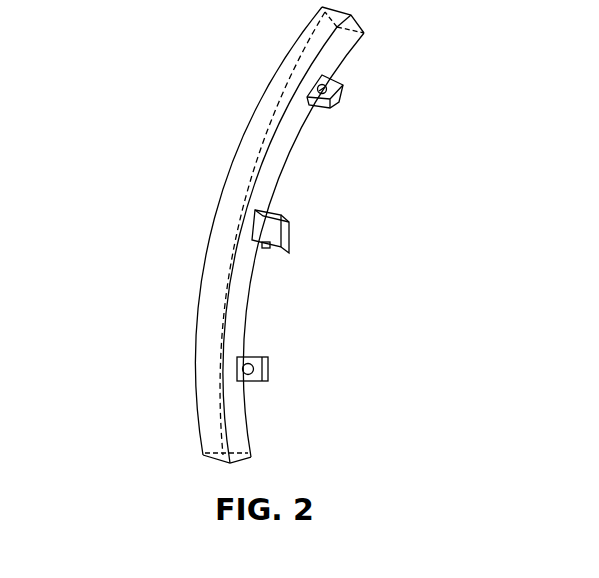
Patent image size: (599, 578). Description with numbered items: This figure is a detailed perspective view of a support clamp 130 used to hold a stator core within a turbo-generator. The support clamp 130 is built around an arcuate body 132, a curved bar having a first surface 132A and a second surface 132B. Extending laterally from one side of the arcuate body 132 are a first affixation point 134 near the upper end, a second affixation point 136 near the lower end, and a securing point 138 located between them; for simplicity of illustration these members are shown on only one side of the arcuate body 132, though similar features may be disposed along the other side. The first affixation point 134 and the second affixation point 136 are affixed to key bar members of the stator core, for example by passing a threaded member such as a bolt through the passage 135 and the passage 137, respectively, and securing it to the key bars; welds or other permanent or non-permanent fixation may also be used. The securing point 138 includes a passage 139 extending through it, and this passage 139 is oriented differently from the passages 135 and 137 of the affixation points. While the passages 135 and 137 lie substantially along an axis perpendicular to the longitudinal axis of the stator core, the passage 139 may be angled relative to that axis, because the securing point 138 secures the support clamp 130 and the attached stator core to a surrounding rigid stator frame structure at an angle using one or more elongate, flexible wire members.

The support clamp 130 is at (214, 96).
The arcuate body 132 is at (184, 278).
The first surface 132A is at (281, 145).
The second surface 132B is at (229, 183).
The first affixation point 134 is at (343, 100).
The passage 135 is at (327, 89).
The second affixation point 136 is at (273, 368).
The passage 137 is at (248, 372).
The securing point 138 is at (294, 235).
The passage 139 is at (267, 250).